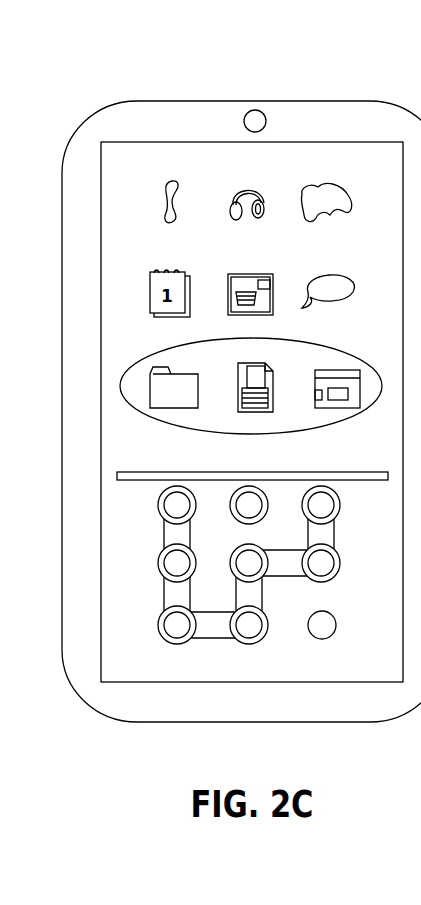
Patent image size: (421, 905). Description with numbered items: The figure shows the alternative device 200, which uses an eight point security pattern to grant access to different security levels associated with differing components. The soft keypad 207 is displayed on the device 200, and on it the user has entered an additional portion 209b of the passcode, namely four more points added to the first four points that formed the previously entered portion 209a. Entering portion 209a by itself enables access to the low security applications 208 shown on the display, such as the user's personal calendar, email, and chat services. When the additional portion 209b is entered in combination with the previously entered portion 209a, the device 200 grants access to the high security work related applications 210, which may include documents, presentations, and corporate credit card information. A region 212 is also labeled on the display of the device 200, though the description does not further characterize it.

The device 200 is at (257, 100).
The soft keypad 207 is at (232, 691).
The low security applications 208 is at (339, 270).
The portion of a passcode 209a is at (158, 497).
The additional portion of the passcode 209b is at (287, 519).
The high security work related applications 210 is at (342, 356).
The pattern unlock region 212 is at (199, 528).